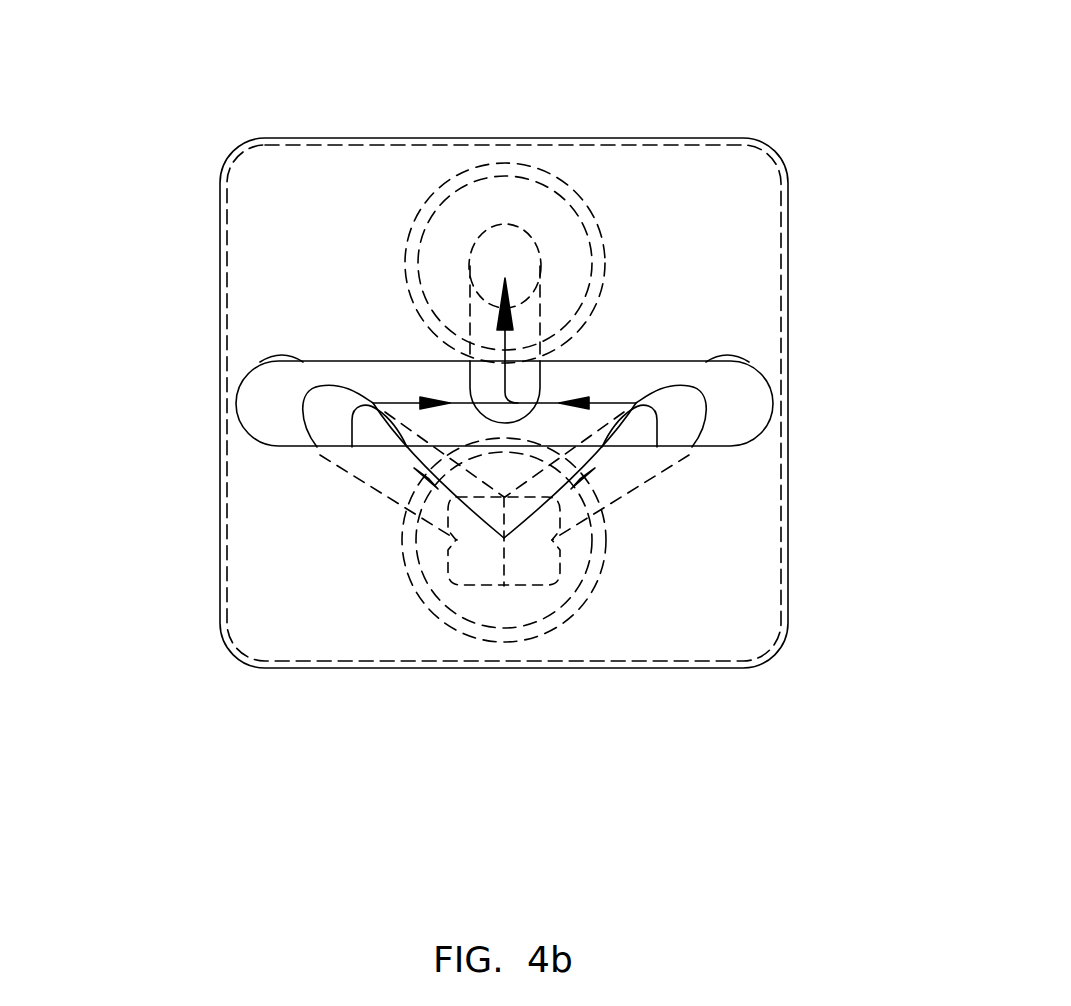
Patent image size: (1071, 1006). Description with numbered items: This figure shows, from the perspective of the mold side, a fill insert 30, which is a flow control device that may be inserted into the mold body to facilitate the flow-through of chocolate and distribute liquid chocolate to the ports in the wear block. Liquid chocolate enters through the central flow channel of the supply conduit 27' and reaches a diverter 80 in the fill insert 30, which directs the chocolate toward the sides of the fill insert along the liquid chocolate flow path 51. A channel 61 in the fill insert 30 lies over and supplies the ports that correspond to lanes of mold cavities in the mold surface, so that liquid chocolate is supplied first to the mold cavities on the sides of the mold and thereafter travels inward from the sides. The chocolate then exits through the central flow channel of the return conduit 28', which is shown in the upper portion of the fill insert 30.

The fill insert 30 is at (220, 306).
The central flow channel of the return conduit 28' is at (561, 221).
The channel 61 is at (743, 400).
The liquid chocolate flow path 51 is at (606, 430).
The diverter 80 is at (504, 583).
The central flow channel of the supply conduit 27' is at (432, 630).